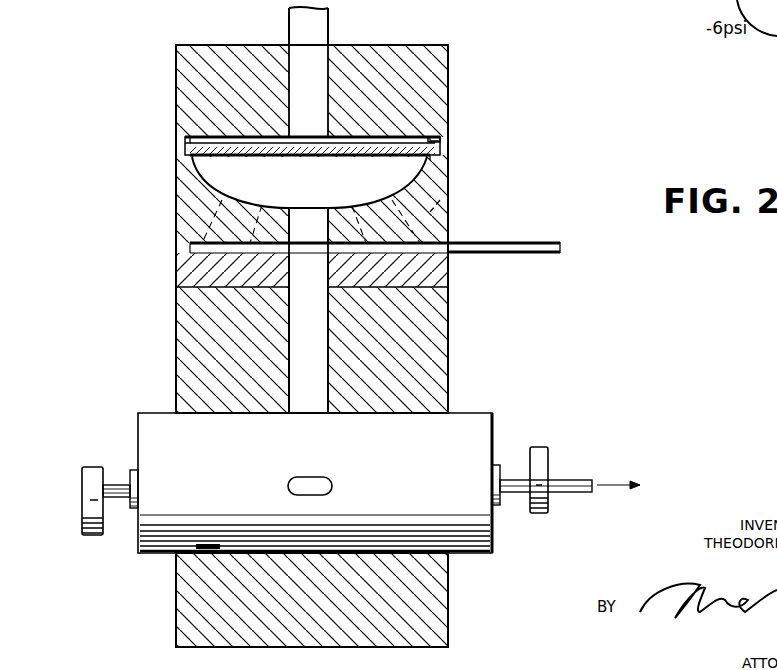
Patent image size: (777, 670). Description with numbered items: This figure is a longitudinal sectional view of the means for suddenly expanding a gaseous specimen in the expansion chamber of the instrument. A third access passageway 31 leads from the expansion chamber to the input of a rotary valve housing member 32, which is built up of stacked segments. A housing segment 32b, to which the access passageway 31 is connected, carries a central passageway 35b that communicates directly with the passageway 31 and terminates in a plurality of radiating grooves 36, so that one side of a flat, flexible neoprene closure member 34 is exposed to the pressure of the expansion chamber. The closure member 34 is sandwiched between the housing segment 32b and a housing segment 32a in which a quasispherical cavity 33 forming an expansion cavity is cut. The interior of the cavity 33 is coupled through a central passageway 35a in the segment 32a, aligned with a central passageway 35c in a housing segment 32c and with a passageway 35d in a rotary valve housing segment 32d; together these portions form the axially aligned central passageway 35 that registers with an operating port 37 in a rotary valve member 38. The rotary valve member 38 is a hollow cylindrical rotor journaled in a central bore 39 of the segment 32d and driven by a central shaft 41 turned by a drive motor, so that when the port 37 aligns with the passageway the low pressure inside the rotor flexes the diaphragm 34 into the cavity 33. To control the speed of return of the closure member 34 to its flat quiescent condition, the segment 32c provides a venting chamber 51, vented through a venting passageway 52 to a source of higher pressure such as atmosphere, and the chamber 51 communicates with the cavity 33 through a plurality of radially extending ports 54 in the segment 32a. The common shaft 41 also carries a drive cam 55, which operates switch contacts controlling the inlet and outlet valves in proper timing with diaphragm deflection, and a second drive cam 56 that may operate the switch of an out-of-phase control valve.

The third access passageway 31 is at (318, 28).
The rotary valve housing member 32 is at (122, 277).
The housing segment 32a is at (182, 198).
The housing segment 32b is at (192, 85).
The housing segment 32c is at (450, 270).
The rotary valve housing segment 32d is at (450, 365).
The quasispherical cavity 33 is at (250, 206).
The flat flexible neoprene closure member 34 is at (186, 150).
The central passageway 35 is at (320, 316).
The central passageway 35a is at (292, 219).
The central passageway 35b is at (293, 57).
The central passageway 35c is at (323, 279).
The passageway 35d is at (323, 354).
The radiating grooves 36 is at (440, 141).
The operating port 37 is at (312, 483).
The rotary valve member 38 is at (482, 432).
The central bore 39 is at (190, 553).
The central shaft 41 is at (118, 483).
The venting chamber 51 is at (432, 246).
The venting passageway 52 is at (549, 240).
The radially extending ports 54 is at (446, 199).
The drive cam 55 is at (88, 480).
The second drive cam 56 is at (548, 461).